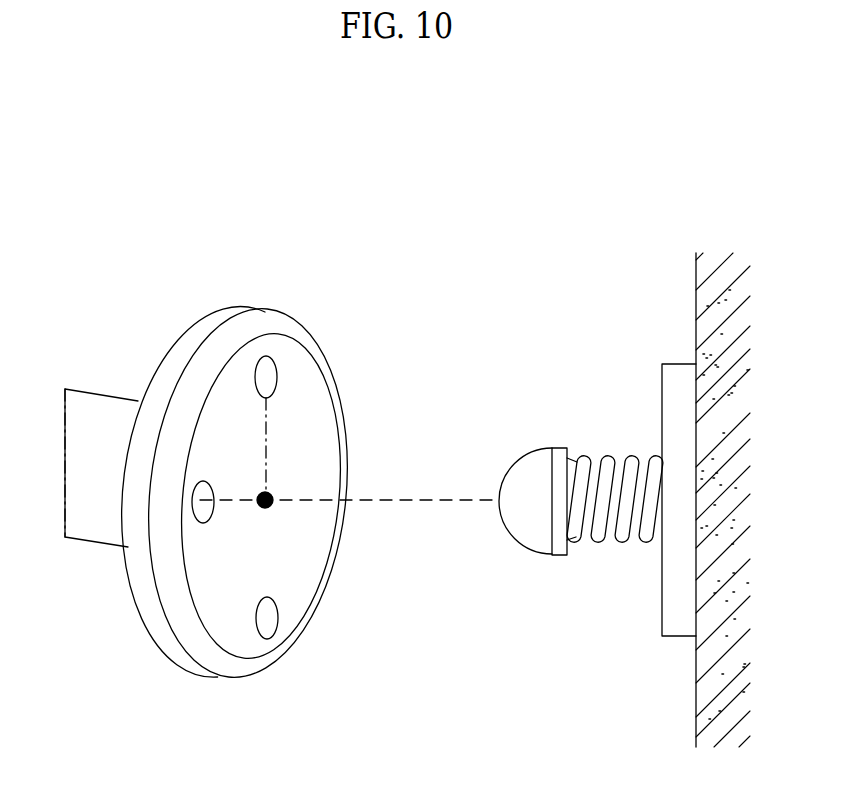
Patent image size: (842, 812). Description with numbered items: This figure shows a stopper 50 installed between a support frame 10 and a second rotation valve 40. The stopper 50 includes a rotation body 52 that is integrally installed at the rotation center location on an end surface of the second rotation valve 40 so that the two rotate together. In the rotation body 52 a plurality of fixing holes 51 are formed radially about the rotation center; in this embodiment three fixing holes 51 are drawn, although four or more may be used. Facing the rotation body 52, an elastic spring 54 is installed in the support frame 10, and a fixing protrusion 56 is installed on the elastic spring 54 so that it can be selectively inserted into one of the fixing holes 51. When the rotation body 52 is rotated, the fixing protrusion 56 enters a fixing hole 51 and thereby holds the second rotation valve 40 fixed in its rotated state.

The support frame 10 is at (670, 623).
The second rotation valve 40 is at (100, 403).
The stopper 50 is at (311, 280).
The fixing holes 51 is at (270, 371).
The rotation body 52 is at (313, 557).
The elastic spring 54 is at (607, 467).
The fixing protrusion 56 is at (523, 463).